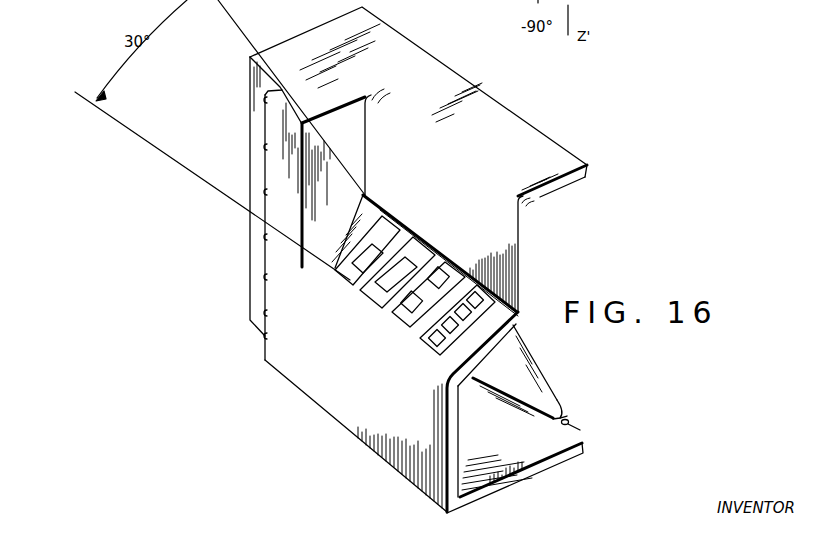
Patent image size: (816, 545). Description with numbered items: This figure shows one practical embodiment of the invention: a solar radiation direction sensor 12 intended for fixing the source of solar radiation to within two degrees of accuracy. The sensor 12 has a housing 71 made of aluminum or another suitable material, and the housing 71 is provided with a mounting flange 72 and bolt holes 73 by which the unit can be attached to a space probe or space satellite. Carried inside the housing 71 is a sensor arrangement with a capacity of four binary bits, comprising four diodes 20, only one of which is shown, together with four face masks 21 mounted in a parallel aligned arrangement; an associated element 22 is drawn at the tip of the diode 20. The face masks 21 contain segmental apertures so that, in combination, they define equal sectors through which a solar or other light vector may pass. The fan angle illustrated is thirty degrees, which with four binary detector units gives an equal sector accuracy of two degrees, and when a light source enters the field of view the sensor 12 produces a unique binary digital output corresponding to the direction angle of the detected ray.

The sensor 12 is at (547, 123).
The housing 71 is at (412, 57).
The mounting flange 72 is at (261, 315).
The bolt holes 73 is at (262, 277).
The face masks 21 is at (352, 283).
The diodes 20 is at (557, 412).
The tip element 22 is at (577, 426).